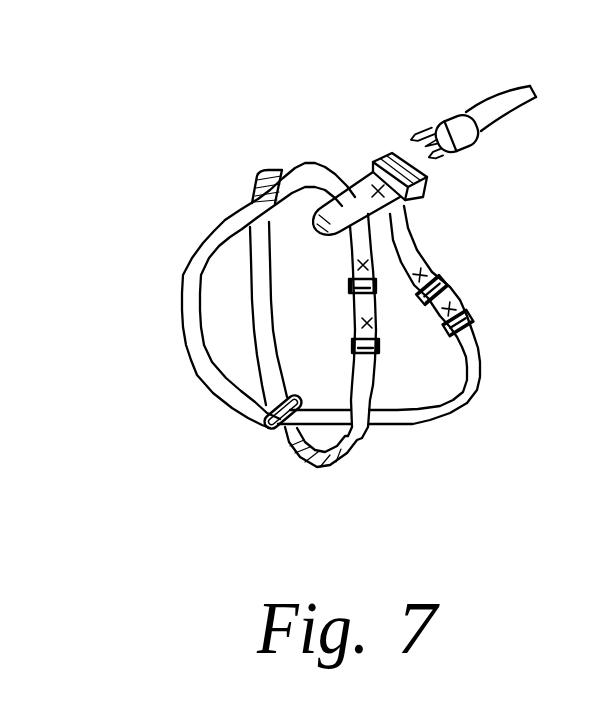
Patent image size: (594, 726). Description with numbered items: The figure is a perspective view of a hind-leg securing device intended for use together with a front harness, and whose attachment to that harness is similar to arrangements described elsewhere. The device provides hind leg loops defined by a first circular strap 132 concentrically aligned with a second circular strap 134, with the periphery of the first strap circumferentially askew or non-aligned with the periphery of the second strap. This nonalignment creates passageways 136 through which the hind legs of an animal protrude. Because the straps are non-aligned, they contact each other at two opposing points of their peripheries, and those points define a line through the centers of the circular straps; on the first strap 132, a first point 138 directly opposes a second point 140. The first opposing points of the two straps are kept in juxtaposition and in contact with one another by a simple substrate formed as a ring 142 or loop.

The first circular strap 132 is at (311, 158).
The second circular strap 134 is at (203, 368).
The passageways 136 is at (230, 312).
The first point 138 is at (340, 195).
The second point 140 is at (283, 434).
The ring 142 is at (265, 439).